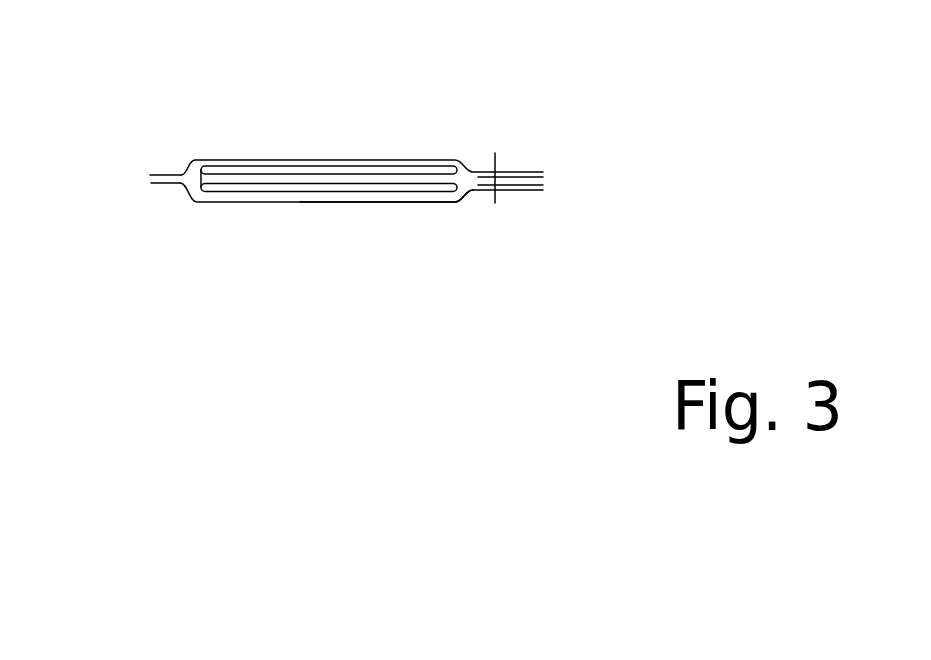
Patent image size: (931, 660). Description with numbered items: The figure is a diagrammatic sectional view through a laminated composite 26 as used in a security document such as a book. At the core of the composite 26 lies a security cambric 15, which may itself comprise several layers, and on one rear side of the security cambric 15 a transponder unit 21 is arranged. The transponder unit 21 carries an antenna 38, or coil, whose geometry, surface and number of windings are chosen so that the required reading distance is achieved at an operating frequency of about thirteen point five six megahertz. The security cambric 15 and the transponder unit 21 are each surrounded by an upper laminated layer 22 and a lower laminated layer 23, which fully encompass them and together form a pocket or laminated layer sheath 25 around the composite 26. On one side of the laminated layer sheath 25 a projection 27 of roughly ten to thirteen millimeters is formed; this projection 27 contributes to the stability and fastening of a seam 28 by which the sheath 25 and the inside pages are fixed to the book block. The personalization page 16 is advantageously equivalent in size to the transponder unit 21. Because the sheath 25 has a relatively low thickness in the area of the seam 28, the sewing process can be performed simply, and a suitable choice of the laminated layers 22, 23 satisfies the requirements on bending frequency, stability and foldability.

The security cambric 15 is at (390, 223).
The personalization page 16 is at (448, 202).
The transponder unit 21 is at (248, 160).
The upper laminated layer 22 is at (170, 173).
The lower laminated layer 23 is at (172, 189).
The laminated layer sheath 25 is at (356, 127).
The composite 26 is at (180, 200).
The projection 27 is at (517, 191).
The seam 28 is at (496, 158).
The antenna 38 is at (238, 203).